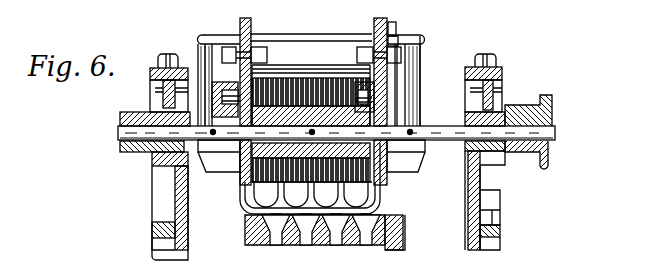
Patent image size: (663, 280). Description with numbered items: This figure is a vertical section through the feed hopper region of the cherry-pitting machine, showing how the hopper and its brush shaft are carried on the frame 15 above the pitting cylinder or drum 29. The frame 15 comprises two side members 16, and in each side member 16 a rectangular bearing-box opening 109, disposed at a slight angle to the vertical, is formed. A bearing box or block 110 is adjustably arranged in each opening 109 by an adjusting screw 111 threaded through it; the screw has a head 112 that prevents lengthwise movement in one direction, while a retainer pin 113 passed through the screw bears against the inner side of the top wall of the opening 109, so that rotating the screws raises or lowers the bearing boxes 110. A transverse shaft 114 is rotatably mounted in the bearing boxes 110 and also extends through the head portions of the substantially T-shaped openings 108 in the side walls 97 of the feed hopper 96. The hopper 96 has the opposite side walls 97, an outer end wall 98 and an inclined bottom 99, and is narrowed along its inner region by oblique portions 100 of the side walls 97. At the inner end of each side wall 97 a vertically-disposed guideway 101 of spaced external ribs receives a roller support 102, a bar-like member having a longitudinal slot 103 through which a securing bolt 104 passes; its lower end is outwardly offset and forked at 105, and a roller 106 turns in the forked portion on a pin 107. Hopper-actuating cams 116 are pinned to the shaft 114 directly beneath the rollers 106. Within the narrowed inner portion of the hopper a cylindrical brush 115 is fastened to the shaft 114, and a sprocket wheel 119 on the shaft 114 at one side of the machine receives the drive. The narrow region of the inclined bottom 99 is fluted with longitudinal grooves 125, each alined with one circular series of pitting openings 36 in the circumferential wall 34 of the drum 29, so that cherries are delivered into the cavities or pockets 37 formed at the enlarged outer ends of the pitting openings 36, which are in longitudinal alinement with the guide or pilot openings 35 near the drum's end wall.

The frame 15 is at (503, 84).
The side member 16 is at (190, 214).
The pitting cylinder or drum 29 is at (405, 242).
The circumferential wall 34 is at (262, 235).
The guide or pilot openings 35 is at (404, 220).
The pitting openings 36 is at (275, 225).
The cavities or pockets 37 is at (268, 228).
The feed hopper 96 is at (426, 42).
The side walls 97 is at (397, 78).
The outer end wall 98 is at (287, 42).
The inclined bottom 99 is at (327, 62).
The oblique portions 100 is at (210, 58).
The guideway 101 is at (296, 60).
The roller support 102 is at (397, 28).
The longitudinal slot 103 is at (400, 40).
The securing bolt 104 is at (380, 28).
The forked portion 105 is at (428, 91).
The roller 106 is at (172, 92).
The pin 107 is at (162, 105).
The T-shaped opening 108 is at (252, 144).
The bearing-box openings 109 is at (162, 166).
The bearing boxes or blocks 110 is at (145, 154).
The adjusting screw 111 is at (150, 68).
The head 112 is at (165, 58).
The retainer pin 113 is at (150, 81).
The transverse shaft 114 is at (122, 133).
The cylindrical brush 115 is at (302, 104).
The hopper-actuating cams 116 is at (412, 187).
The sprocket wheel 119 is at (550, 150).
The grooves 125 is at (250, 227).